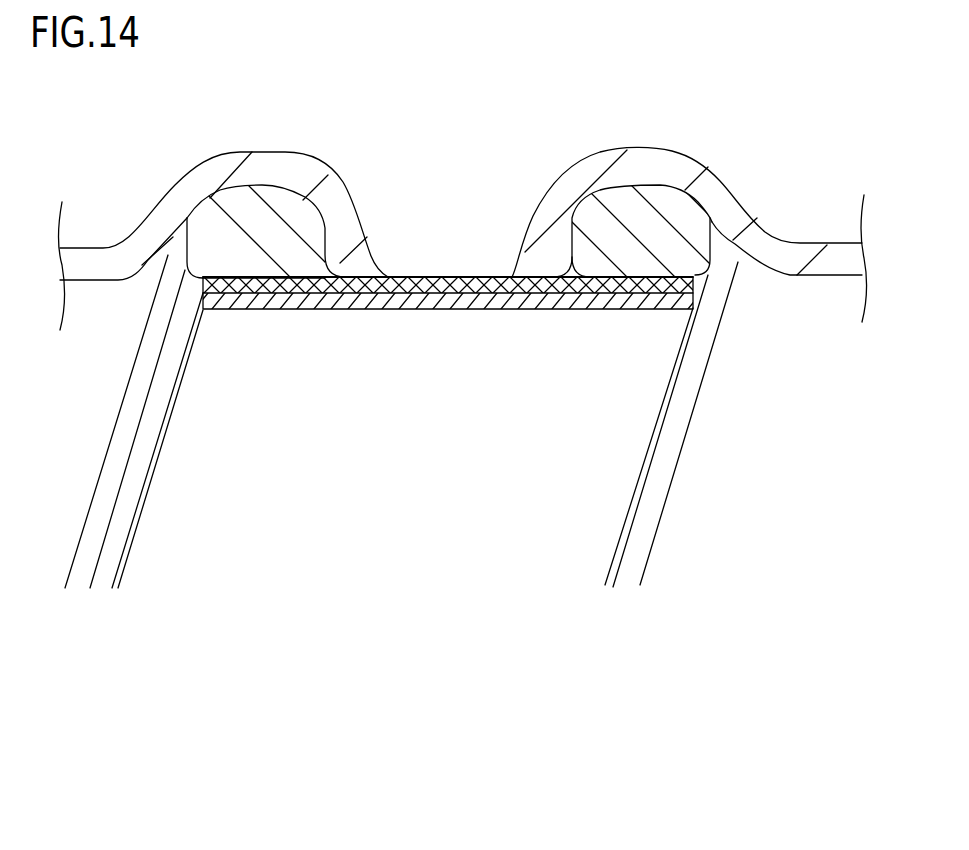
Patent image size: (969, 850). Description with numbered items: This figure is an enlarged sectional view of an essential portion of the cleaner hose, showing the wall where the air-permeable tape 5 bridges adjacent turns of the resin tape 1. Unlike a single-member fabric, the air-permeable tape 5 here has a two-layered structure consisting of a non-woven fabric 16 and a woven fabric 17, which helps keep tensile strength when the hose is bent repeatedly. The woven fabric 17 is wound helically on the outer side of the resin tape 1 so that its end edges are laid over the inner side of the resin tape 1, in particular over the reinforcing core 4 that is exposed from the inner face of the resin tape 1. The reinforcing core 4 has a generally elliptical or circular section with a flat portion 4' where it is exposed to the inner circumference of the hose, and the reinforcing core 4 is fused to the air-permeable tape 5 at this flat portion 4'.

The resin tape 1 is at (722, 193).
The reinforcing core 4 is at (430, 340).
The flat portion 4' is at (264, 336).
The air-permeable tape 5 is at (448, 273).
The non-woven fabric 16 is at (452, 310).
The woven fabric 17 is at (412, 282).